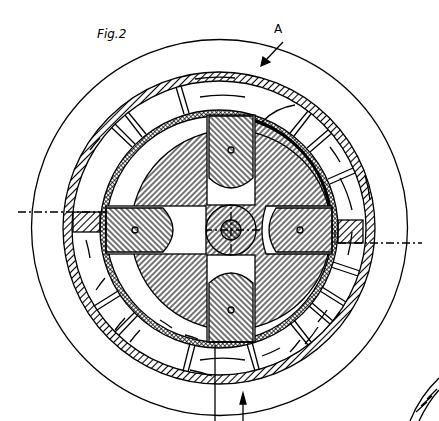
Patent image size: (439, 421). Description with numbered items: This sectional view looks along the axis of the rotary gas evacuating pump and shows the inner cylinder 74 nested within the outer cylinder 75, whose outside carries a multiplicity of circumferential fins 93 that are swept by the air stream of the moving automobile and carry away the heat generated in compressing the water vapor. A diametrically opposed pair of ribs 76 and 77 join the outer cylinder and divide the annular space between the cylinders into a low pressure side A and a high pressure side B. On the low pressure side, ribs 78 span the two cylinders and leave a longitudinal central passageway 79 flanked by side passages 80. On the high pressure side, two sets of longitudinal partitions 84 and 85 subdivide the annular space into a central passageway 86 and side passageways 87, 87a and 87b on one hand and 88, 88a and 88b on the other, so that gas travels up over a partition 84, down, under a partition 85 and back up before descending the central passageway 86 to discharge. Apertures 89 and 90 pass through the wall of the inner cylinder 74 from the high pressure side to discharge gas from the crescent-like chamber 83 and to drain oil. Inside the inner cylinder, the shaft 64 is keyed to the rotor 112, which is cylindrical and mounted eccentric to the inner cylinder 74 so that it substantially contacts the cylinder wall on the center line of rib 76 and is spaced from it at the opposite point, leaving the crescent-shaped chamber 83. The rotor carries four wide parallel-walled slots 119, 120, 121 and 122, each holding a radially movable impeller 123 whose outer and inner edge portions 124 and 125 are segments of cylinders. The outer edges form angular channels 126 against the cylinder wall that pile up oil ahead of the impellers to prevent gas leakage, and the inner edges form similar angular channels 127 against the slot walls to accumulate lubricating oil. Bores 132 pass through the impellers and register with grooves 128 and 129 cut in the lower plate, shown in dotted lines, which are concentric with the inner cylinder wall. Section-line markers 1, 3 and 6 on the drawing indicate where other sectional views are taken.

The section line 1- 1 is at (18, 214).
The section line 3- 3 is at (343, 149).
The stator ring portion 6 is at (207, 342).
The shaft 64 is at (236, 196).
The inner cylinder 74 is at (312, 108).
The outer cylinder 75 is at (290, 92).
The rib 76 is at (370, 205).
The rib 77 is at (65, 243).
The ribs 78 is at (332, 130).
The longitudinal central passageway 79 is at (223, 88).
The side passages 80 is at (347, 150).
The crescent-like chamber 83 is at (114, 124).
The partitions 84 is at (348, 302).
The partitions 85 is at (308, 352).
The central passageway 86 is at (203, 380).
The side passageway 87 is at (365, 268).
The side passageway 87a is at (350, 313).
The side passageway 87b is at (290, 365).
The side passageway 88 is at (80, 291).
The side passageway 88a is at (106, 332).
The side passageway 88b is at (130, 362).
The apertures 89 is at (360, 287).
The apertures 90 is at (110, 280).
The circumferential fins 93 is at (50, 188).
The rotor 112 is at (341, 319).
The slot 119 is at (168, 319).
The slot 120 is at (190, 332).
The slot 121 is at (265, 124).
The slot 122 is at (196, 142).
The impeller 123 is at (245, 112).
The outer edge portion 124 is at (215, 73).
The inner edge portion 125 is at (170, 209).
The angular channels 126 is at (266, 353).
The angular channels 127 is at (328, 336).
The groove 128 is at (333, 186).
The groove 129 is at (219, 256).
The bores 132 is at (132, 206).